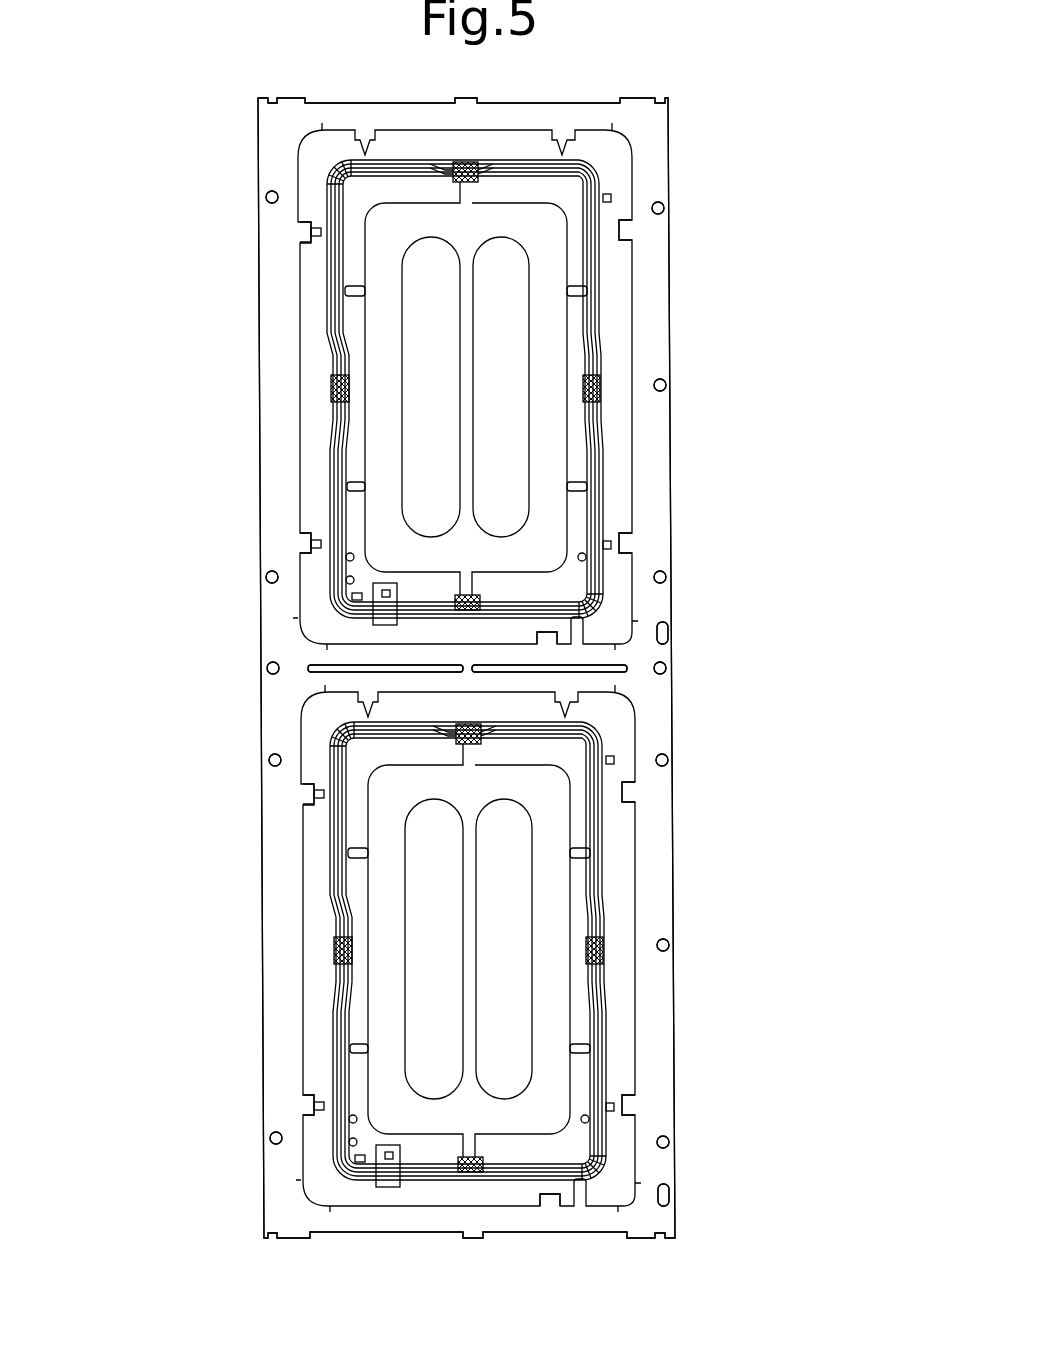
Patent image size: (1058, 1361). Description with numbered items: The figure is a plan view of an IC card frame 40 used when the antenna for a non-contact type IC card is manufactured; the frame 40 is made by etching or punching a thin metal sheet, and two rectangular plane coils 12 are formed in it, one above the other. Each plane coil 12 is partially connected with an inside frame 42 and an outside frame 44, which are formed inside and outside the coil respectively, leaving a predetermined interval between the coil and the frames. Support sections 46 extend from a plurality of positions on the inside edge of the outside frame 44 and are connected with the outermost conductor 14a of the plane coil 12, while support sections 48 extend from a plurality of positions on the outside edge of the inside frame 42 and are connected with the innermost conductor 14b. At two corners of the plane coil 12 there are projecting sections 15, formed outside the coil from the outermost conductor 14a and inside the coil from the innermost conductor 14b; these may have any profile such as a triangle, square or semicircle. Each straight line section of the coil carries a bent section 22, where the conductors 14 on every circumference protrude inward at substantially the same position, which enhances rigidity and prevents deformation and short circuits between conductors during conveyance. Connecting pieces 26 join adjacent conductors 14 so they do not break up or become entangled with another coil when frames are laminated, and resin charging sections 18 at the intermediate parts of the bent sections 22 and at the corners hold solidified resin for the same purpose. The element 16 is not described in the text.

The plane coil 12 is at (622, 178).
The conductor 14 is at (608, 462).
The outermost conductor 14a is at (332, 492).
The innermost conductor 14b is at (355, 565).
The projecting section 15 is at (606, 172).
The terminal pad 16 is at (397, 592).
The resin charging section 18 is at (462, 163).
The bent section 22 is at (600, 385).
The connecting piece 26 is at (405, 172).
The IC card frame 40 is at (494, 95).
The inside frame 42 is at (372, 347).
The outside frame 44 is at (655, 303).
The support section 46 is at (614, 548).
The support section 48 is at (582, 296).